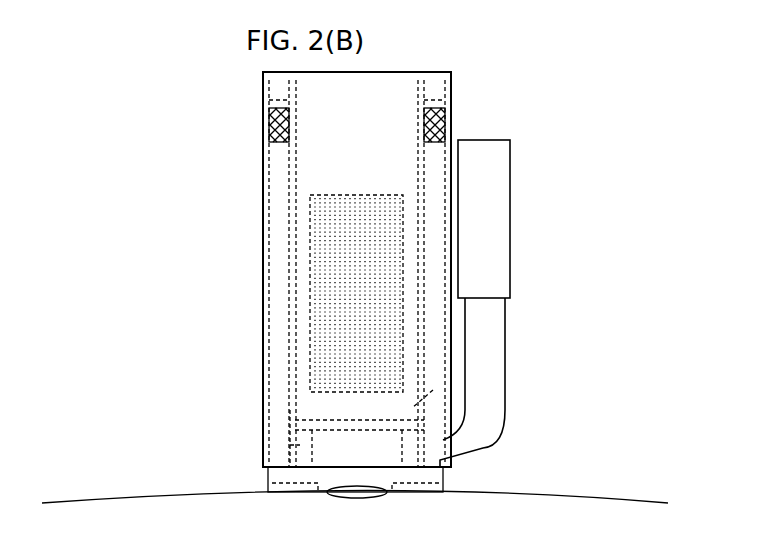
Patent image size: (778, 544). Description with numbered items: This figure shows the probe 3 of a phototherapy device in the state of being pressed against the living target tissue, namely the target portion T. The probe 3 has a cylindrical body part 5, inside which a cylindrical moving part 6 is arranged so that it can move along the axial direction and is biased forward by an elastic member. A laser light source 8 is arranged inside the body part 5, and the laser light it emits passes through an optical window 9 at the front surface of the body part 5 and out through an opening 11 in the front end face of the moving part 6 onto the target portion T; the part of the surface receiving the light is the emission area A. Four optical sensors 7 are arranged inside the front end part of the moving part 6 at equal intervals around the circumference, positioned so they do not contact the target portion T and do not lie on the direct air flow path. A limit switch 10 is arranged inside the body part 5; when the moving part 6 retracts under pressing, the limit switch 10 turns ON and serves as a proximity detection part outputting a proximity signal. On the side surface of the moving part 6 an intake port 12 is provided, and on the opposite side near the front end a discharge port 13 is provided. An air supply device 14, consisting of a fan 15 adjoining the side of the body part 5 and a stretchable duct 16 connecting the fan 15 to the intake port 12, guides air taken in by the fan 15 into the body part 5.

The probe 3 is at (592, 183).
The body part 5 is at (262, 182).
The moving part 6 is at (447, 488).
The optical sensors 7 is at (262, 437).
The laser light source 8 is at (347, 292).
The optical window 9 is at (433, 390).
The limit switch 10 is at (258, 125).
The opening 11 is at (280, 410).
The intake port 12 is at (460, 443).
The discharge port 13 is at (258, 478).
The air supply device 14 is at (533, 238).
The fan 15 is at (512, 163).
The duct 16 is at (508, 320).
The target portion T is at (580, 493).
The emission area A is at (340, 497).